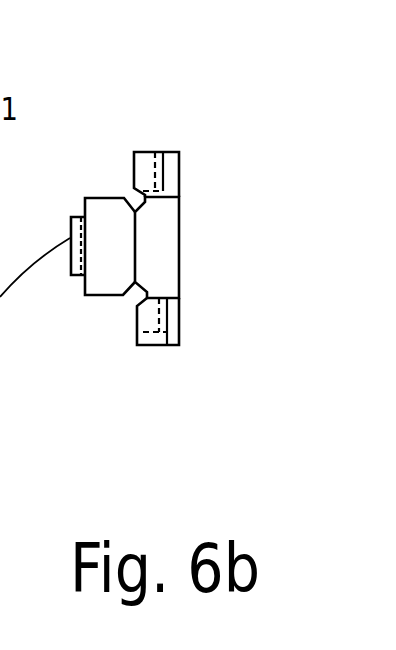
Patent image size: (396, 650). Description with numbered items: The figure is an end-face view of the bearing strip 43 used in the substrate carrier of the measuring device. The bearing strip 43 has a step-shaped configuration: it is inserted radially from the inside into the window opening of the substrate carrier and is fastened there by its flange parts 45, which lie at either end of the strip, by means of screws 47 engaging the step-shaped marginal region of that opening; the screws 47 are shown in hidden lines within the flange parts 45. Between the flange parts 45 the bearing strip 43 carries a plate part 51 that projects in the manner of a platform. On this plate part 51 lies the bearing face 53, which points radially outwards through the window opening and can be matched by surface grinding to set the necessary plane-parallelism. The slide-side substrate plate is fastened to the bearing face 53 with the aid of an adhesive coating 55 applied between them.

The bearing strip 43 is at (165, 237).
The flange parts 45 is at (147, 152).
The screws 47 is at (170, 168).
The plate part 51 is at (103, 210).
The bearing face 53 is at (85, 290).
The adhesive coating 55 is at (88, 233).